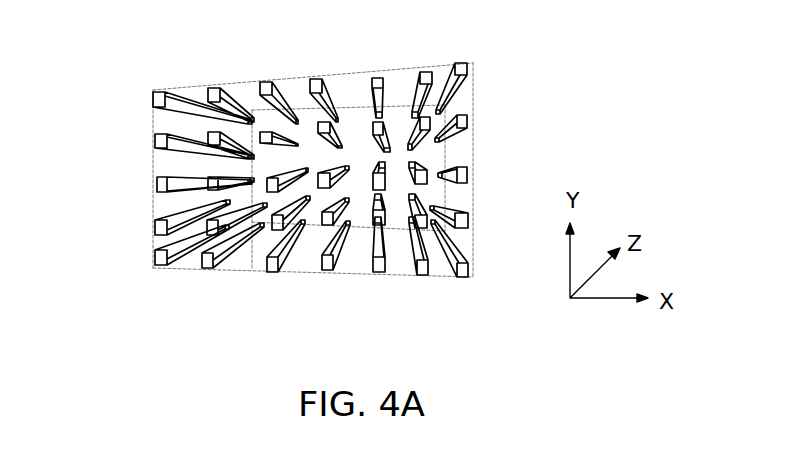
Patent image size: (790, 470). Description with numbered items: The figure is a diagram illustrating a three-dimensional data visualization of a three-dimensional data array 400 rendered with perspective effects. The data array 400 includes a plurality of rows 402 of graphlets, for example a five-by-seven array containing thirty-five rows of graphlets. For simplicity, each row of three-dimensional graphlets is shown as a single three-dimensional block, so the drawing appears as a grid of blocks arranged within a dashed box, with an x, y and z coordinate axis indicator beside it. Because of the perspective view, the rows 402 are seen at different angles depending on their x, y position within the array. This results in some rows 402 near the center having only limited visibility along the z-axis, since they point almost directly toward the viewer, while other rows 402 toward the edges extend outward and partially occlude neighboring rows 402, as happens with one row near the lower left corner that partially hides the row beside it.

The 3D data array 400 is at (130, 81).
The rows of graphlets 402 is at (373, 78).